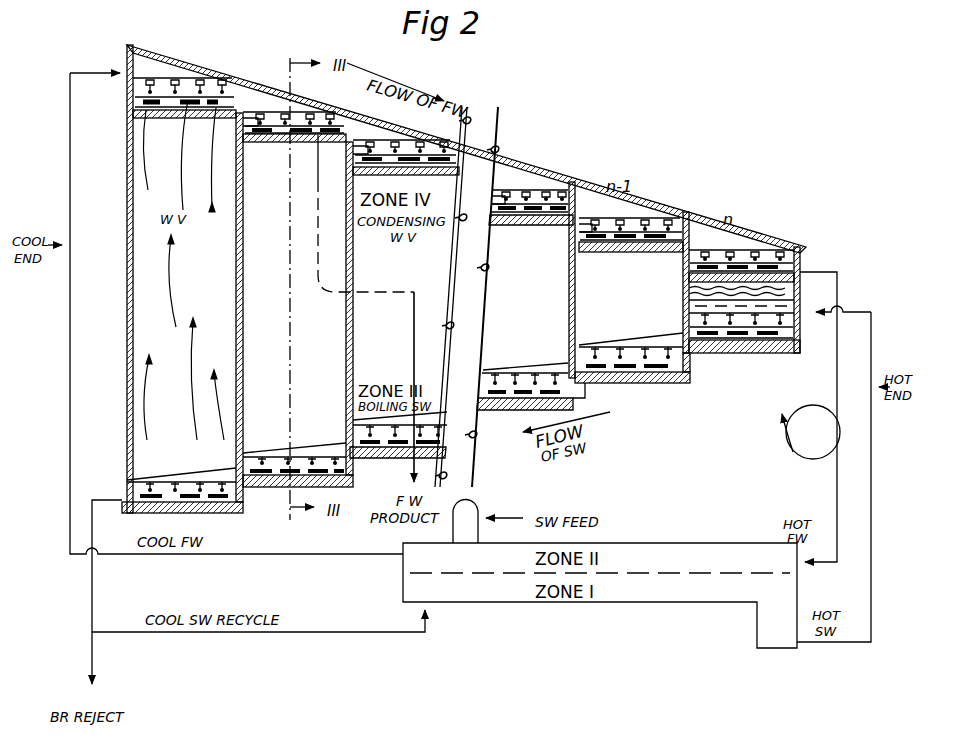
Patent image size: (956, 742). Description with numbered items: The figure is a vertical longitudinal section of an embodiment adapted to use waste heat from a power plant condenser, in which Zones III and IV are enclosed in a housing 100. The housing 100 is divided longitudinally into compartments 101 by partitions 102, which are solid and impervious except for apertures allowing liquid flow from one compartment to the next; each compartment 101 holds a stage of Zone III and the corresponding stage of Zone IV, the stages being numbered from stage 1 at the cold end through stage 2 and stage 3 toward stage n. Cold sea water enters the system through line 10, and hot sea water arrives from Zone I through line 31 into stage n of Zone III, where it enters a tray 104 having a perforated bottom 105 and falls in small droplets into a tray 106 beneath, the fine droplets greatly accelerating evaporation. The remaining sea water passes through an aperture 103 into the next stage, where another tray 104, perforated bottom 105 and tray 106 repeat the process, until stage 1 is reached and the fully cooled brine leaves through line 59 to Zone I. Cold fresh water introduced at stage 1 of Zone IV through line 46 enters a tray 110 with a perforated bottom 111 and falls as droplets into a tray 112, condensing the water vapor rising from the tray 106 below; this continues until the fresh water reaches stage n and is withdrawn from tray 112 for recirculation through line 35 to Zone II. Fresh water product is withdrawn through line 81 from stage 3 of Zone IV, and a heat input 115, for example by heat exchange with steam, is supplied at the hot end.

The stage 1 is at (181, 82).
The stage 2 is at (294, 110).
The stage 3 is at (406, 140).
The sea water feed line 10 is at (505, 518).
The hot sea water line 31 is at (870, 595).
The hot fresh water line 35 is at (836, 510).
The cold fresh water line 46 is at (105, 400).
The cooled brine recycle line 59 is at (93, 582).
The fresh water product line 81 is at (403, 468).
The housing 100 is at (663, 207).
The compartment 101 is at (631, 260).
The partition 102 is at (568, 303).
The aperture 103 is at (700, 375).
The tray 104 is at (762, 317).
The perforated bottom 105 is at (762, 343).
The tray 106 is at (220, 510).
The tray 110 is at (128, 66).
The perforated bottom 111 is at (187, 76).
The tray 112 is at (148, 108).
The heat input 115 is at (816, 452).